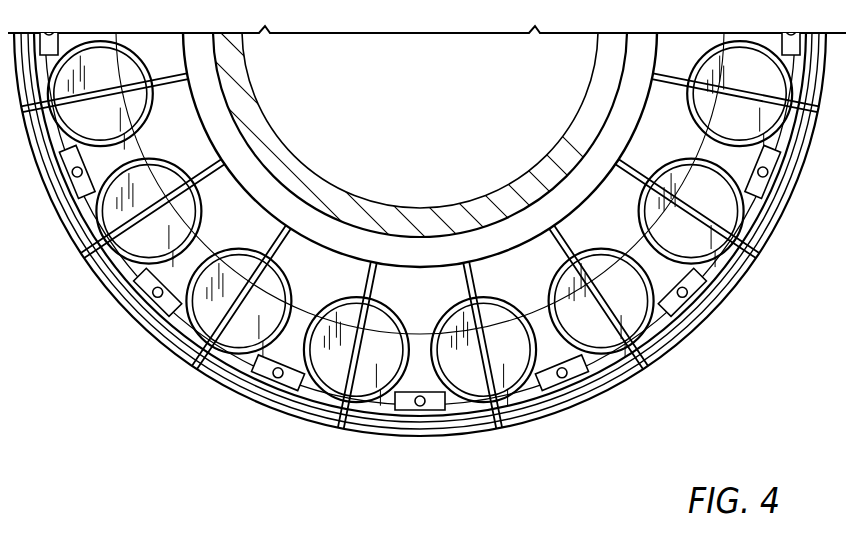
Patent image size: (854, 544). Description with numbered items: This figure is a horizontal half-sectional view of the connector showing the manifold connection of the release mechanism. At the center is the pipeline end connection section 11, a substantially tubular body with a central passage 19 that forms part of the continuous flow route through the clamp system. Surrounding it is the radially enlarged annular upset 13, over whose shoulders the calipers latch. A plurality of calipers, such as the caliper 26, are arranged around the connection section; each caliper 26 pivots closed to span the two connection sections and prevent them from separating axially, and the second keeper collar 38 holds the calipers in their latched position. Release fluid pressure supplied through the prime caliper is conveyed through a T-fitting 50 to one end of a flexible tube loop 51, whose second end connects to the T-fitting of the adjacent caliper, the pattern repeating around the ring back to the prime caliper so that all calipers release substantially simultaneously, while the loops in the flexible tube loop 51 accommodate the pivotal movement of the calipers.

The pipeline end connection section 11 is at (300, 167).
The annular upset 13 is at (377, 250).
The central passage 19 is at (585, 88).
The caliper 26 is at (185, 127).
The second keeper collar 38 is at (92, 256).
The T-fitting 50 is at (72, 192).
The flexible tube loop 51 is at (720, 265).